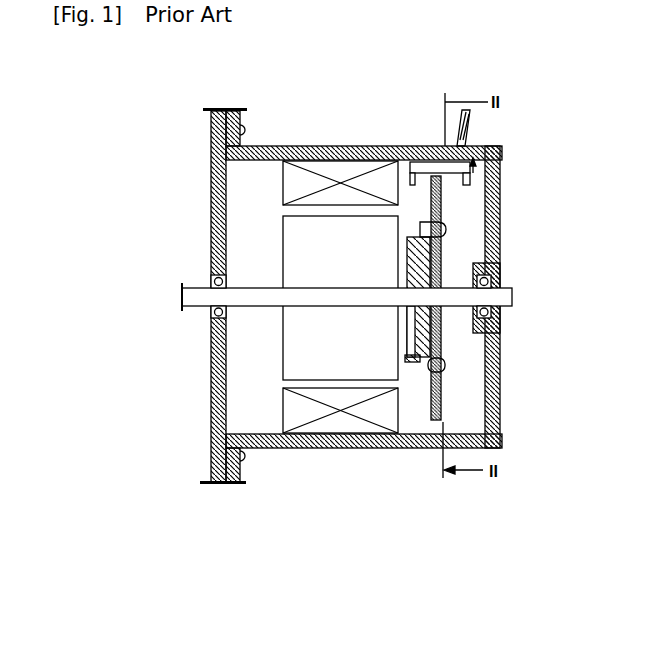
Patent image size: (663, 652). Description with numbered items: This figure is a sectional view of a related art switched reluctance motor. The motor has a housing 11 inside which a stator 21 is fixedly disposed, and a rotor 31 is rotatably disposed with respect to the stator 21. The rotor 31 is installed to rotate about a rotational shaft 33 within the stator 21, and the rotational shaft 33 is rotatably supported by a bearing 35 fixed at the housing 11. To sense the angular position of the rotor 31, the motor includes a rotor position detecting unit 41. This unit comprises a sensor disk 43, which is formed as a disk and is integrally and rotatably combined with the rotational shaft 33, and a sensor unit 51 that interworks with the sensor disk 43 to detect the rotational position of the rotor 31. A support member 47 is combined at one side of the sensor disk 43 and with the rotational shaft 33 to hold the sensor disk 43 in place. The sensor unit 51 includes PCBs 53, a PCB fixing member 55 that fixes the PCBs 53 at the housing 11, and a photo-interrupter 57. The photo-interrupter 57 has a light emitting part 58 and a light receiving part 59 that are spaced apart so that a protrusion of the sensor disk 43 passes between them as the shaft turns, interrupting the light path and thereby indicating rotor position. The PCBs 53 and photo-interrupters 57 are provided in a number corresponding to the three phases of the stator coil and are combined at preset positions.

The housing 11 is at (500, 432).
The stator 21 is at (283, 180).
The rotor 31 is at (283, 352).
The rotational shaft 33 is at (200, 292).
The bearing 35 is at (211, 315).
The rotor position detecting unit 41 is at (456, 252).
The sensor disk 43 is at (442, 395).
The support member 47 is at (444, 365).
The sensor unit 51 is at (477, 125).
The PCB 53 is at (431, 170).
The PCB fixing member 55 is at (415, 146).
The photo-interrupter 57 is at (567, 165).
The light emitting part 58 is at (414, 178).
The light receiving part 59 is at (470, 176).